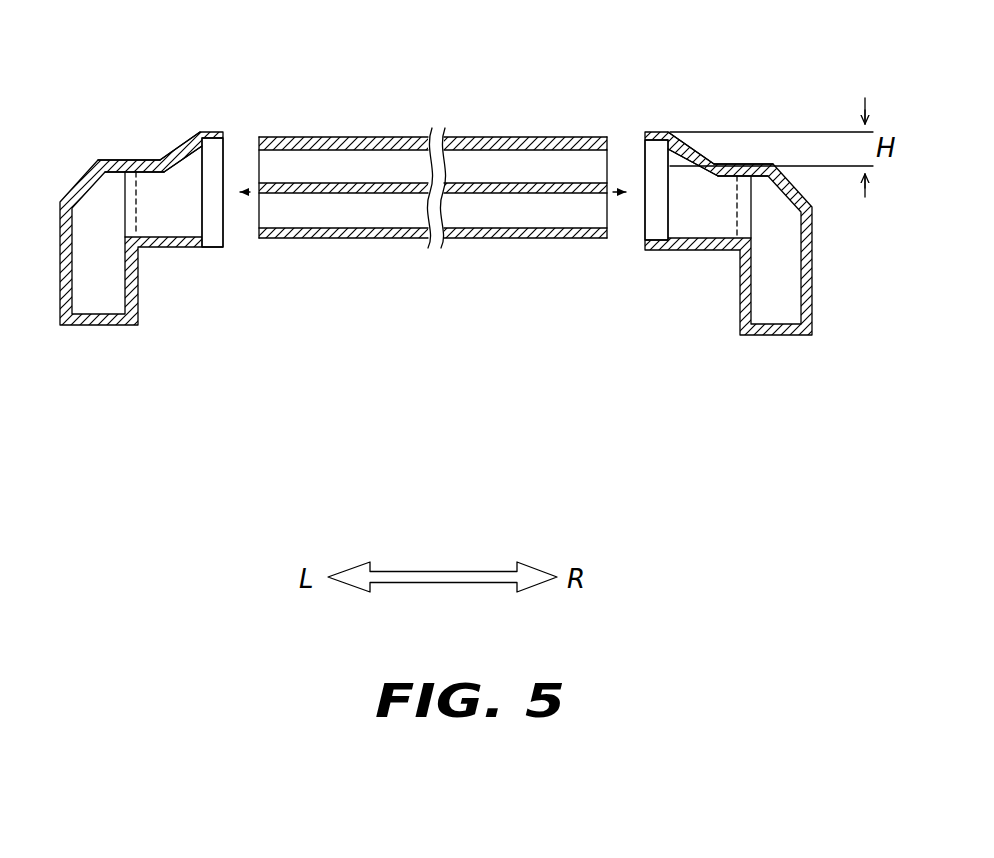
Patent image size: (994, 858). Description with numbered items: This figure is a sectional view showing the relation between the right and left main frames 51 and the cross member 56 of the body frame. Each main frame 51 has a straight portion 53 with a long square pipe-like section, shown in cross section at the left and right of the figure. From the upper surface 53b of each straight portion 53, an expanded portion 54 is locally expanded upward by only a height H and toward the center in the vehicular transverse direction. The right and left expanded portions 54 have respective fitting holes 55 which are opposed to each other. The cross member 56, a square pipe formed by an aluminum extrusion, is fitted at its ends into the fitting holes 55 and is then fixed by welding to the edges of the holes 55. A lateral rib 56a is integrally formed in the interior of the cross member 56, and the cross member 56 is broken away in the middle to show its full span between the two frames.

The main frame 51 is at (447, 296).
The straight portion 53 is at (103, 329).
The upper surface 53b is at (122, 159).
The expanded portion 54 is at (190, 140).
The fitting hole 55 is at (221, 157).
The cross member 56 is at (433, 192).
The lateral rib 56a is at (352, 194).